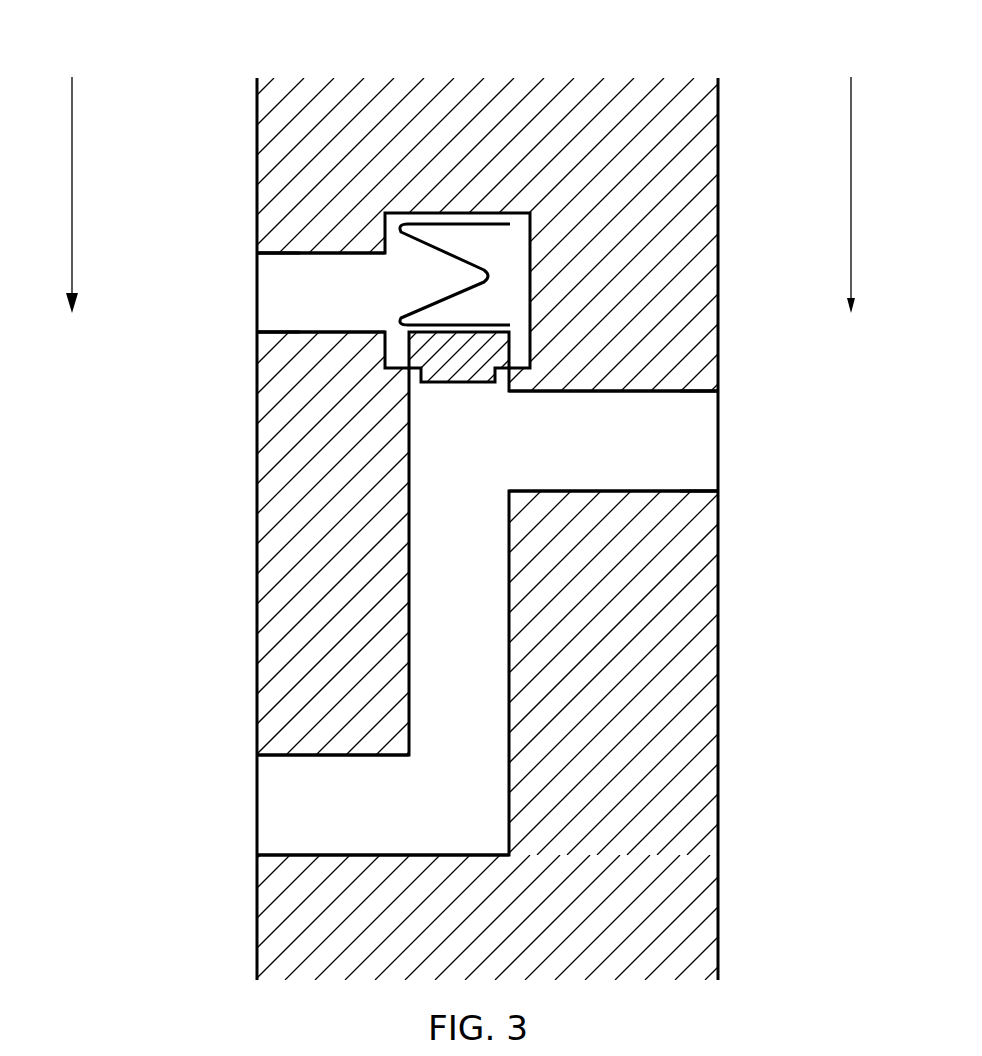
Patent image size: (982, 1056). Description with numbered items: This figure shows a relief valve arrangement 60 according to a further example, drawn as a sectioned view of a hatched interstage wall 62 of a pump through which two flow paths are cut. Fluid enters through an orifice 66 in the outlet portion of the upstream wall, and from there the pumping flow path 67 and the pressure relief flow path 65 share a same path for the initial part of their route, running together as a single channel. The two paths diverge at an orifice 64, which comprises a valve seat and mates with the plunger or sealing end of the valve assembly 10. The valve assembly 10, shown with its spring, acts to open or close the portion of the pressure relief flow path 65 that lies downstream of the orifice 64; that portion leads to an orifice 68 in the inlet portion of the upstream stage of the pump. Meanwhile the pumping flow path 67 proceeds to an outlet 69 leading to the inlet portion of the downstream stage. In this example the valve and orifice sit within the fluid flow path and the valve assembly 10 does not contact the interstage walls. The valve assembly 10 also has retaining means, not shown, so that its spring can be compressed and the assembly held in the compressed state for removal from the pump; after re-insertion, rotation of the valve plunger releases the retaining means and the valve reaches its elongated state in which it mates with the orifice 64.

The valve assembly 10 is at (460, 212).
The valve arrangement 60 is at (208, 134).
The housing 62 is at (718, 122).
The orifice 64 is at (410, 370).
The pressure relief flow path 65 is at (377, 300).
The orifice 66 is at (328, 802).
The pumping flow path 67 is at (652, 467).
The orifice 68 is at (258, 320).
The outlet 69 is at (718, 435).